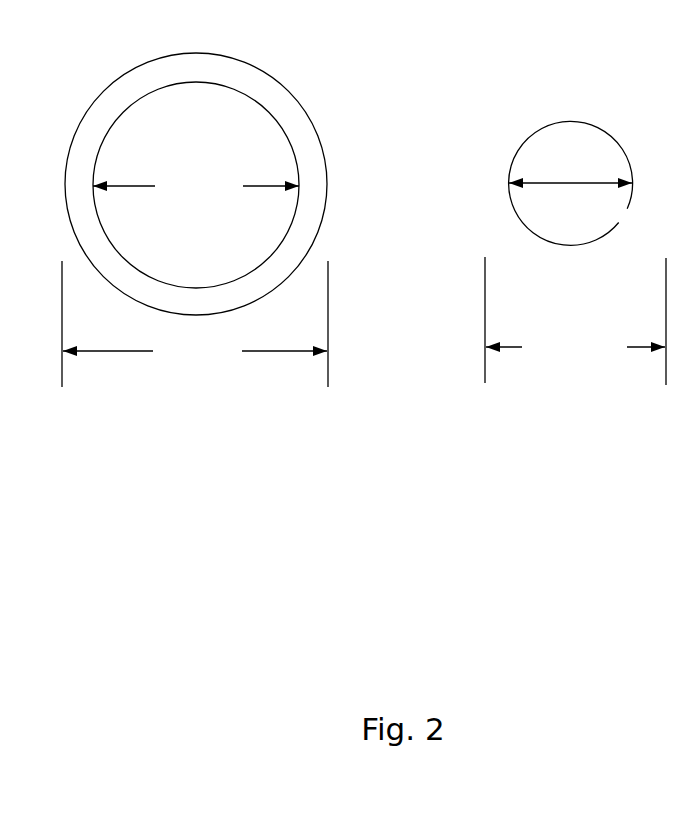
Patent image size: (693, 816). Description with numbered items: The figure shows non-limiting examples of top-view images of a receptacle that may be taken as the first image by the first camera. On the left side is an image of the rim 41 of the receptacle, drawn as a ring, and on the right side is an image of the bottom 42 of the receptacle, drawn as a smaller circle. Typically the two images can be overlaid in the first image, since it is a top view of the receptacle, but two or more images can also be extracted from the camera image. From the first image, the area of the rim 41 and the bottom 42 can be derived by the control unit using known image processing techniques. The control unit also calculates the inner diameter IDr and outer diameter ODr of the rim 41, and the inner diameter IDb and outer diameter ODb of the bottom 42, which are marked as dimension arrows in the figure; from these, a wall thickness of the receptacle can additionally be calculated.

The rim 41 is at (257, 75).
The bottom 42 is at (588, 145).
The inner diameter of the rim IDr is at (196, 186).
The outer diameter of the rim ODr is at (195, 324).
The inner diameter of the bottom IDb is at (570, 199).
The outer diameter of the bottom ODb is at (575, 321).